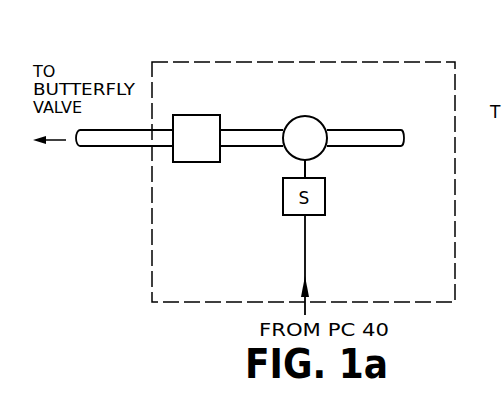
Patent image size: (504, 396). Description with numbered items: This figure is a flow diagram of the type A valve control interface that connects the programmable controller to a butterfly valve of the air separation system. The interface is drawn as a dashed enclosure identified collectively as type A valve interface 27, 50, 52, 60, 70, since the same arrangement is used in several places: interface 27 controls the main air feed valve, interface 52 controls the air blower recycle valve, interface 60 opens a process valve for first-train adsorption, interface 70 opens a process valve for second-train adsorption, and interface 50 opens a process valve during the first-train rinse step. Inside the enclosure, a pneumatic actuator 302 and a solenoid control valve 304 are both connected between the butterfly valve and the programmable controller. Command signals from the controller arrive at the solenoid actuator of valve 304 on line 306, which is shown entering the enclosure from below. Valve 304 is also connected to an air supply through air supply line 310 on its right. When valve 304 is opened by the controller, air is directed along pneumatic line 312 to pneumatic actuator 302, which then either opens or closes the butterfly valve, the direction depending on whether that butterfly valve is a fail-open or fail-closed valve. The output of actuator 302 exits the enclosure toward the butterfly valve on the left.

The type A valve interface 27 is at (303, 160).
The type A interface 50 is at (303, 160).
The type A interface 52 is at (303, 160).
The type A interface 60 is at (303, 160).
The type A interface 70 is at (277, 62).
The pneumatic actuator 302 is at (192, 115).
The solenoid control valve 304 is at (299, 116).
The line 306 is at (305, 259).
The air supply line 310 is at (344, 131).
The pneumatic line 312 is at (253, 131).